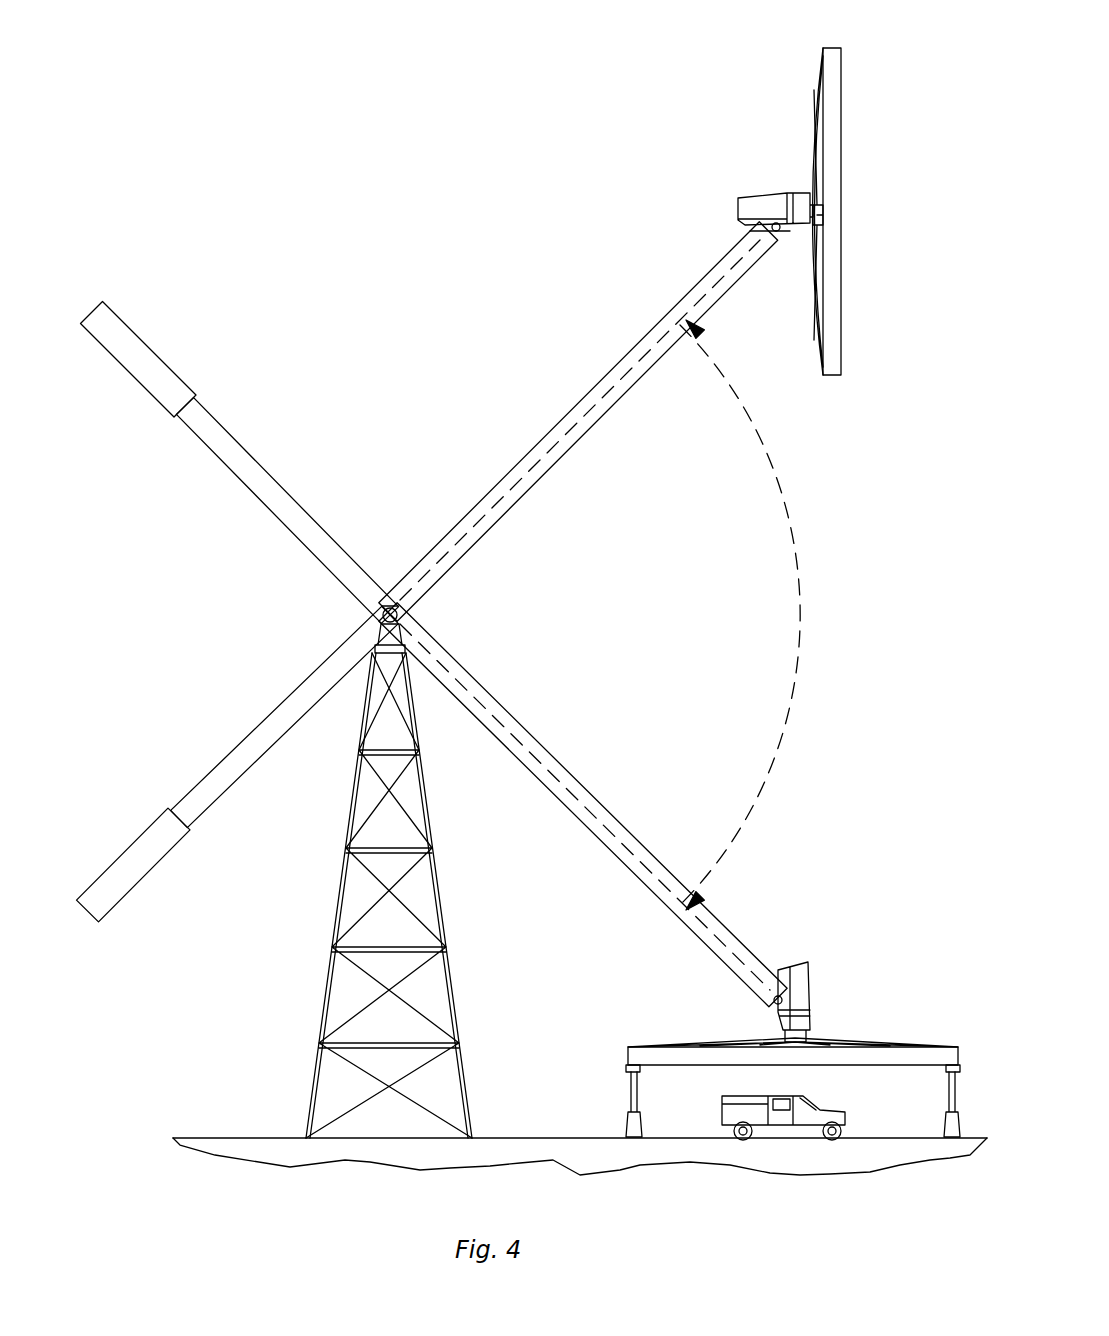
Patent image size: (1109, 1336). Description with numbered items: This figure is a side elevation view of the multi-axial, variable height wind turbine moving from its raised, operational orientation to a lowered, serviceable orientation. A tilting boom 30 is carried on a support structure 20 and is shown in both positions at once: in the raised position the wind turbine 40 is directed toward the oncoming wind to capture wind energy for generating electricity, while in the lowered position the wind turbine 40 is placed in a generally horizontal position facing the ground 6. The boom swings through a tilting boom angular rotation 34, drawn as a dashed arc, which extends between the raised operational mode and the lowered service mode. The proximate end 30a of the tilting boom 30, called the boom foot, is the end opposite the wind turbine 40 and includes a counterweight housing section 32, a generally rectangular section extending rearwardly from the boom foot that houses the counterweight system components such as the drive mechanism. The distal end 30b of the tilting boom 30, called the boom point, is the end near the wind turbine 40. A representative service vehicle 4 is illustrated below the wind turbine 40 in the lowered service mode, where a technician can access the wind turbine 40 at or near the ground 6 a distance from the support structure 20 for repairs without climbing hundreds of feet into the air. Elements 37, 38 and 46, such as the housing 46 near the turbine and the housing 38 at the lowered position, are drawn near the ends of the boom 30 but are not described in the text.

The vehicle 4 is at (800, 1128).
The ground 6 is at (588, 1140).
The support structure 20 is at (280, 947).
The tilting boom 30 is at (477, 608).
The proximate end 30a is at (176, 807).
The distal end 30b is at (778, 264).
The counterweight housing section 32 is at (128, 312).
The tilting boom angular rotation 34 is at (805, 590).
The arm 37 is at (690, 260).
The housing 38 is at (840, 942).
The wind turbine 40 is at (862, 40).
The housing 46 is at (752, 180).